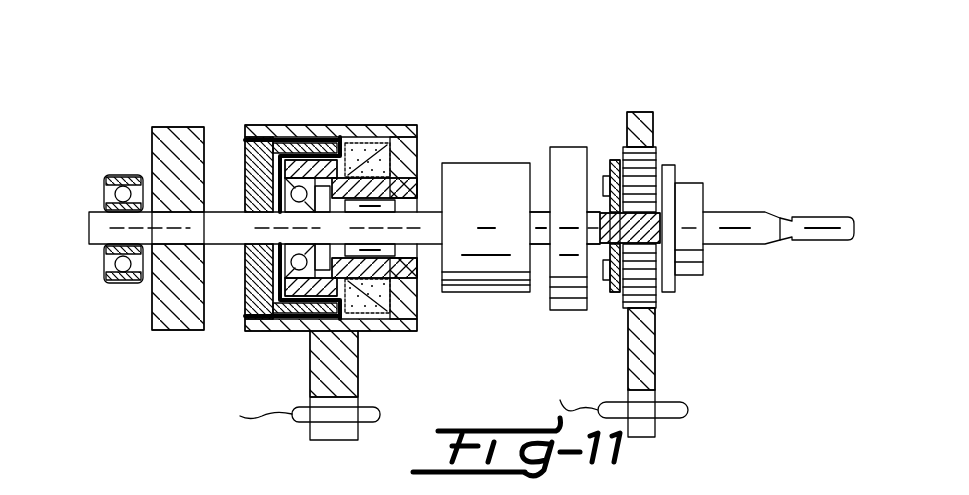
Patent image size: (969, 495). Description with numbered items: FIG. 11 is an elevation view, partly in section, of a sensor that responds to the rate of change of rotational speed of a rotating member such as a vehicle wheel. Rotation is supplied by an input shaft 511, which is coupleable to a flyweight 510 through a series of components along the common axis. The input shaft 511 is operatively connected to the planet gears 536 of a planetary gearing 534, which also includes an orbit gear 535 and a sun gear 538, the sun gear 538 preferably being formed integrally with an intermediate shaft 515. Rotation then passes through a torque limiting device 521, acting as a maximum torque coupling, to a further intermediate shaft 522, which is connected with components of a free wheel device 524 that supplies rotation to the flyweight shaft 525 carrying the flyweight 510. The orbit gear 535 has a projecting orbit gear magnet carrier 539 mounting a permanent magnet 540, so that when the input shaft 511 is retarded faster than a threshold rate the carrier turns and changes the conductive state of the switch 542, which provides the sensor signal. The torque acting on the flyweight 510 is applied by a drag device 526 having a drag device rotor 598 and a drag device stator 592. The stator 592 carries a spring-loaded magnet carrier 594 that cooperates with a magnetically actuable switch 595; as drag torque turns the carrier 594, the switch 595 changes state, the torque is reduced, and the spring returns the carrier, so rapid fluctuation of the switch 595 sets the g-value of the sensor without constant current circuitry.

The flyweight 510 is at (178, 127).
The input shaft 511 is at (737, 222).
The intermediate shaft 515 is at (590, 245).
The torque limiting device 521 is at (572, 148).
The intermediate shaft 522 is at (540, 245).
The free wheel device 524 is at (460, 163).
The flyweight shaft 525 is at (214, 220).
The drag device 526 is at (362, 127).
The planetary gearing 534 is at (643, 102).
The orbit gear 535 is at (650, 110).
The planet gears 536 is at (655, 157).
The sun gear 538 is at (656, 216).
The orbit gear magnet carrier 539 is at (650, 340).
The permanent magnet 540 is at (650, 433).
The switch 542 is at (688, 405).
The drag device stator 592 is at (347, 125).
The magnet carrier 594 is at (345, 357).
The magnetically actuable switch 595 is at (307, 418).
The drag device rotor 598 is at (248, 308).